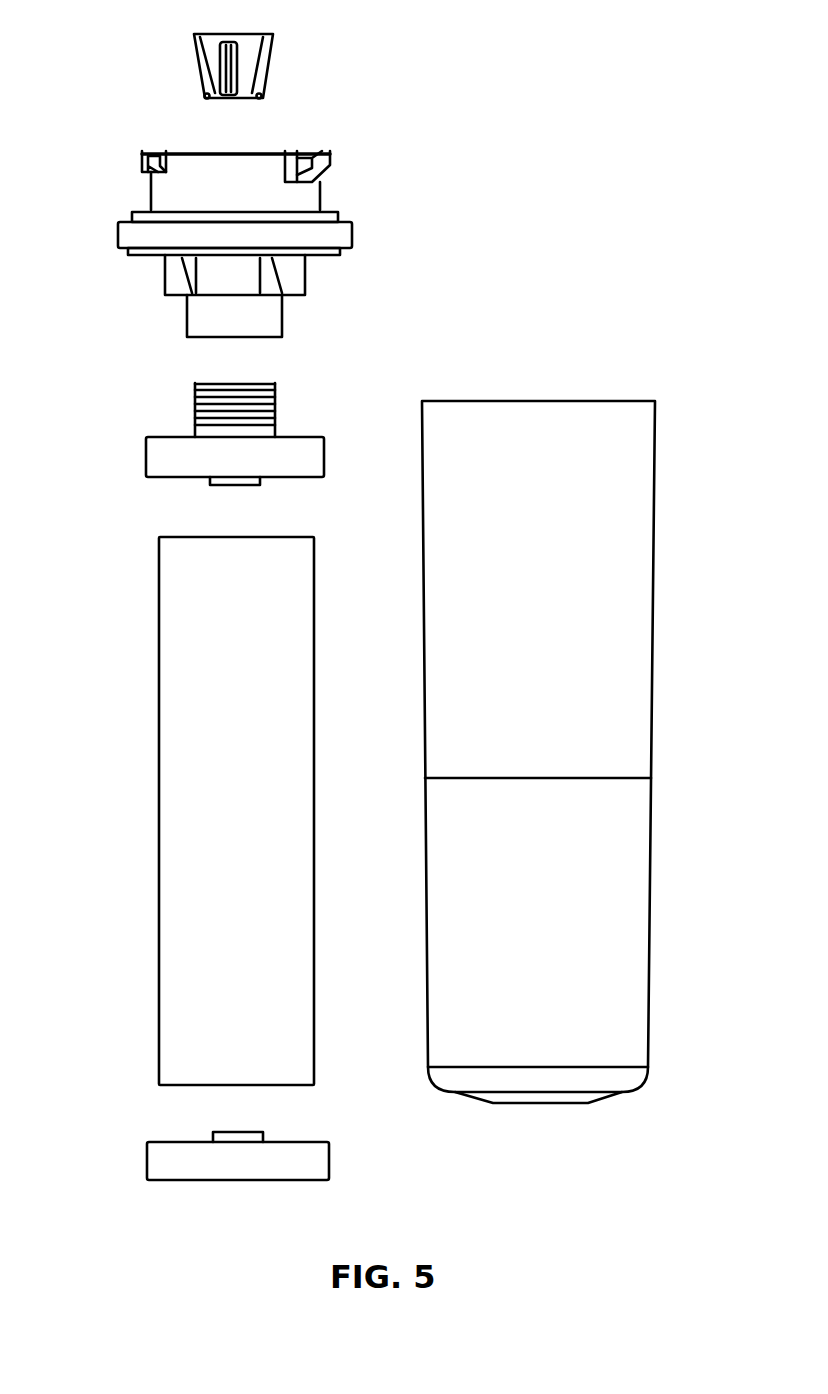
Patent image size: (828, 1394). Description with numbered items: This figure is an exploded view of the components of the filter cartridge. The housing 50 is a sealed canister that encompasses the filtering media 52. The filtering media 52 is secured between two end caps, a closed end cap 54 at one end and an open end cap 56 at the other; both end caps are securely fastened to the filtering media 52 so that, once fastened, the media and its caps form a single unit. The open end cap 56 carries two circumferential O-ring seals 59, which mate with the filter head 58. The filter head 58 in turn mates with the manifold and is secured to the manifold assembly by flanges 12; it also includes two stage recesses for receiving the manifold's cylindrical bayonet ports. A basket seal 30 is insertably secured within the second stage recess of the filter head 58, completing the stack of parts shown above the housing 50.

The basket seal 30 is at (270, 62).
The flanges 12 is at (318, 160).
The filter head 58 is at (172, 272).
The O-ring seals 59 is at (202, 418).
The open end cap 56 is at (170, 458).
The filtering media 52 is at (183, 882).
The closed end cap 54 is at (172, 1160).
The housing 50 is at (650, 842).